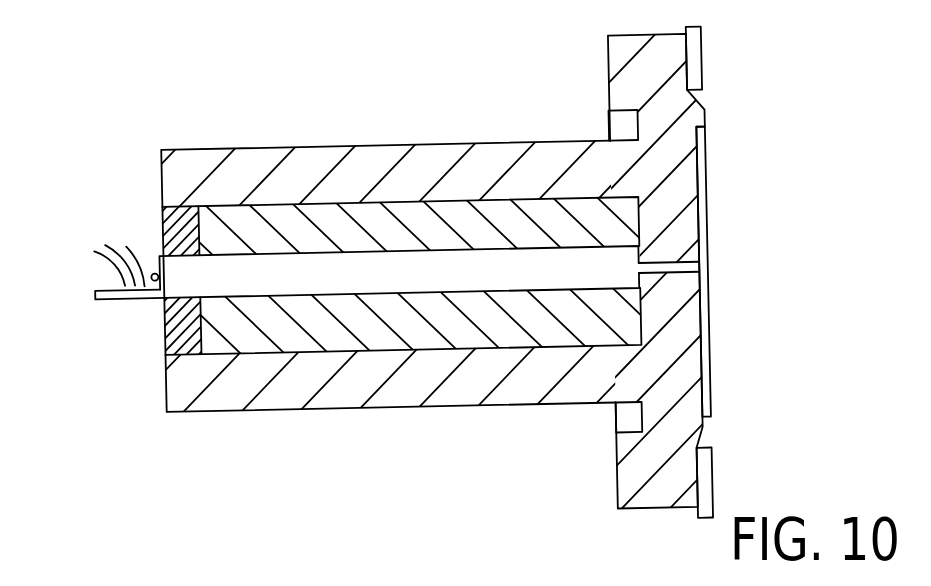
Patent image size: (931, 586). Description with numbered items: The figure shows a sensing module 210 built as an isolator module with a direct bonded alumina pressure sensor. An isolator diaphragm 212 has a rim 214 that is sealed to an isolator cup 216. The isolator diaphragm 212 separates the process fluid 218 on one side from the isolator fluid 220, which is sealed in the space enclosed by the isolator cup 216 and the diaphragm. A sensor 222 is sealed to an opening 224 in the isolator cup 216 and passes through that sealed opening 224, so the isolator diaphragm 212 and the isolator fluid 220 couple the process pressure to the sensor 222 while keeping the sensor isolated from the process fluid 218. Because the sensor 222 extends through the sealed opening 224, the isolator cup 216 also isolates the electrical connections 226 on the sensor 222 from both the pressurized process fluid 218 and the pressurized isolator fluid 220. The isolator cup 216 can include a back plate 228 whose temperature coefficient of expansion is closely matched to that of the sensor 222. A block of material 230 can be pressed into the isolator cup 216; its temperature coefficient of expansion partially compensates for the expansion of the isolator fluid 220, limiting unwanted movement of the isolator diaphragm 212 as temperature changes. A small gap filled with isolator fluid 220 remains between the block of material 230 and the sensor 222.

The sensing module 210 is at (268, 120).
The isolator diaphragm 212 is at (707, 141).
The rim 214 is at (689, 56).
The isolator cup 216 is at (160, 163).
The process fluid 218 is at (807, 308).
The isolator fluid 220 is at (662, 271).
The sensor 222 is at (365, 287).
The opening 224 is at (165, 327).
The electrical connections 226 is at (112, 268).
The back plate 228 is at (167, 342).
The block of material 230 is at (313, 233).